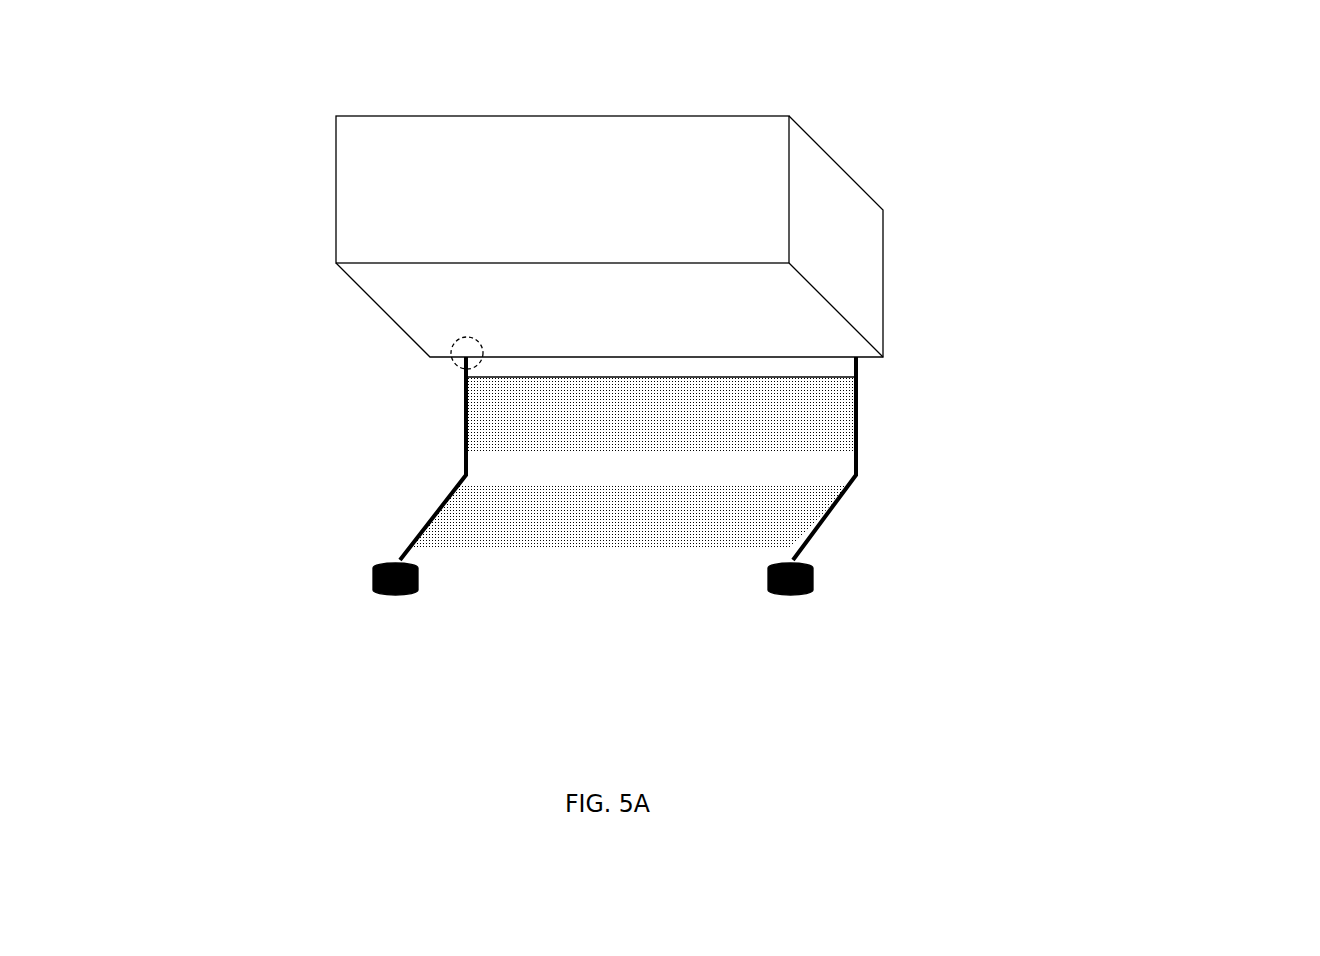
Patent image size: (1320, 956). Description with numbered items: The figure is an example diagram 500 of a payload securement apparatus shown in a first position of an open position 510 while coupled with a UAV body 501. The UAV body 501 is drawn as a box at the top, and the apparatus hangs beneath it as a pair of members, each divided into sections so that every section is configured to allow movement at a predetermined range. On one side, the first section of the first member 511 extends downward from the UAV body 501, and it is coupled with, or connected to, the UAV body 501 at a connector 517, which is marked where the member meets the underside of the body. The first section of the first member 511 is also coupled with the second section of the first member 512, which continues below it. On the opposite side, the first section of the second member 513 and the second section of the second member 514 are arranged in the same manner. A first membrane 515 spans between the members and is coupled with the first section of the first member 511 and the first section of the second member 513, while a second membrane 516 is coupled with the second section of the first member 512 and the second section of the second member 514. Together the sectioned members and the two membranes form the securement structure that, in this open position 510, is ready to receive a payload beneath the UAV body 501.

The example diagram 500 is at (1082, 238).
The UAV body 501 is at (789, 117).
The first position of an open position 510 is at (435, 462).
The first section of the first member 511 is at (466, 405).
The second section of the first member 512 is at (407, 547).
The first section of the second member 513 is at (858, 378).
The second section of the second member 514 is at (795, 554).
The first membrane 515 is at (770, 423).
The second membrane 516 is at (630, 513).
The connector 517 is at (482, 342).